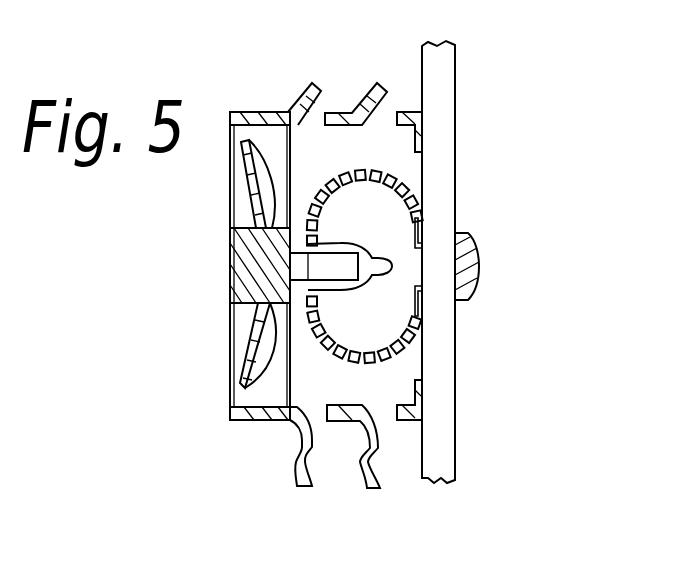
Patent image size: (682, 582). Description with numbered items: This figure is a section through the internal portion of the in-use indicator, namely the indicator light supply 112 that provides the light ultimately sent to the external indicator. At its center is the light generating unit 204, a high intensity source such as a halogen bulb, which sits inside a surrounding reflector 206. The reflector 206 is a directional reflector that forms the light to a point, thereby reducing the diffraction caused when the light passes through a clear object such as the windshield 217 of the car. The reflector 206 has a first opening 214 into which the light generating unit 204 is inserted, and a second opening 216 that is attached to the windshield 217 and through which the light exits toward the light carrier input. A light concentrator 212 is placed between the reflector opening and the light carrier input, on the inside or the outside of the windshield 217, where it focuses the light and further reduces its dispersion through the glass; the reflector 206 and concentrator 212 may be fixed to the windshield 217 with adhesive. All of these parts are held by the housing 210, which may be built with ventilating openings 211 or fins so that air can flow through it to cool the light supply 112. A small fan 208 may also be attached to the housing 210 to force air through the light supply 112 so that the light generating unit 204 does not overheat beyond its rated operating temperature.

The indicator light supply 112 is at (158, 252).
The light generating unit 204 is at (362, 288).
The reflector 206 is at (336, 338).
The fan 208 is at (245, 357).
The housing 210 is at (252, 112).
The ventilating openings 211 is at (383, 410).
The light concentrator 212 is at (480, 262).
The first opening 214 is at (308, 252).
The second opening 216 is at (421, 244).
The windshield 217 is at (447, 422).